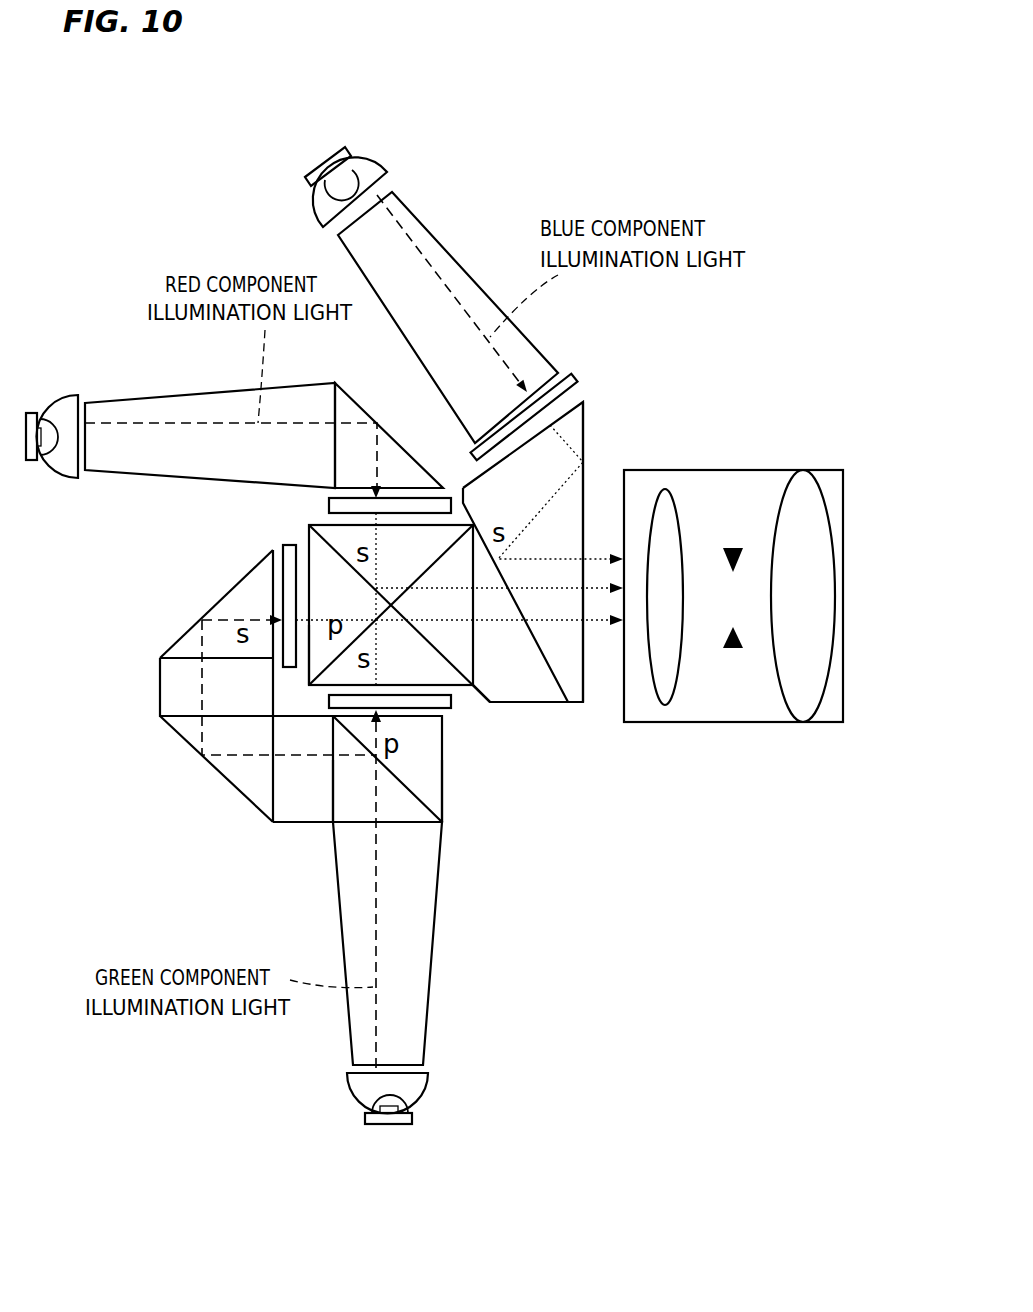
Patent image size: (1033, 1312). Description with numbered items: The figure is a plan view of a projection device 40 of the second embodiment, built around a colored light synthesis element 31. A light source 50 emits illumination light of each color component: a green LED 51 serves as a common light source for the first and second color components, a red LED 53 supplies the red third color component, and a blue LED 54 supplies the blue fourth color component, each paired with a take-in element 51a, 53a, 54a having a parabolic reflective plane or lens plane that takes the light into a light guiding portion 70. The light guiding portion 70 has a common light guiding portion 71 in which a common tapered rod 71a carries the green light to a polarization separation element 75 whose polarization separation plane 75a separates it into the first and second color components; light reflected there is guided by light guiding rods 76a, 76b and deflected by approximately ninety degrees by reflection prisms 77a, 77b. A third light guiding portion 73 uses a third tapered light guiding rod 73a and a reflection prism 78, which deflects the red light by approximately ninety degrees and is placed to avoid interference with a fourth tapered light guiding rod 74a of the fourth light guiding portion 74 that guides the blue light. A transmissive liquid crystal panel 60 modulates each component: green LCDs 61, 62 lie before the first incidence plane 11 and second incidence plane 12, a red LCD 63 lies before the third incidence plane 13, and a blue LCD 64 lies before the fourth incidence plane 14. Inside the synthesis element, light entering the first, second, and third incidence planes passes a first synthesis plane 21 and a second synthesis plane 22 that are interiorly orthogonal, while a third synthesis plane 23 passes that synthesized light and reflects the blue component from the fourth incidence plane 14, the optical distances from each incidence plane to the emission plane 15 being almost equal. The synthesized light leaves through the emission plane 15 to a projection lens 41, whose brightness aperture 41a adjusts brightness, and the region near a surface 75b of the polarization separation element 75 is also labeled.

The projection device 40 is at (640, 97).
The light source 50 is at (138, 255).
The blue LED 54 is at (323, 160).
The take-in element 54a is at (318, 212).
The fourth light guiding portion 74 is at (445, 168).
The fourth tapered light guiding rod 74a is at (460, 280).
The blue LCD 64 is at (577, 377).
The fourth incidence plane 14 is at (585, 395).
The third incidence plane 13 is at (462, 515).
The emission plane 15 is at (585, 432).
The colored light synthesis element 31 is at (613, 452).
The projection lens 41 is at (690, 723).
The brightness aperture 41a is at (732, 650).
The third light guiding portion 73 is at (127, 380).
The third tapered light guiding rod 73a is at (185, 398).
The red LED 53 is at (30, 413).
The take-in element 53a is at (62, 475).
The reflection prism 78 is at (398, 452).
The red LCD 63 is at (329, 506).
The second incidence plane 12 is at (307, 533).
The first synthesis plane 21 is at (443, 550).
The second synthesis plane 22 is at (450, 658).
The third synthesis plane 23 is at (567, 688).
The green LCD 62 is at (283, 547).
The green LCD 61 is at (452, 702).
The transmissive liquid crystal panel 60 is at (470, 738).
The light guiding portion 70 is at (110, 640).
The reflection prism 77b is at (225, 607).
The light guiding rod 76b is at (162, 697).
The reflection prism 77a is at (225, 765).
The first incidence plane 11 is at (312, 658).
The light guiding rod 76a is at (285, 825).
The polarization separation element 75 is at (438, 788).
The entrance surface 75b is at (337, 812).
The polarization separation plane 75a is at (417, 813).
The common light guiding portion 71 is at (567, 972).
The common tapered rod 71a is at (422, 1017).
The take-in element 51a is at (428, 1090).
The green LED 51 is at (397, 1125).